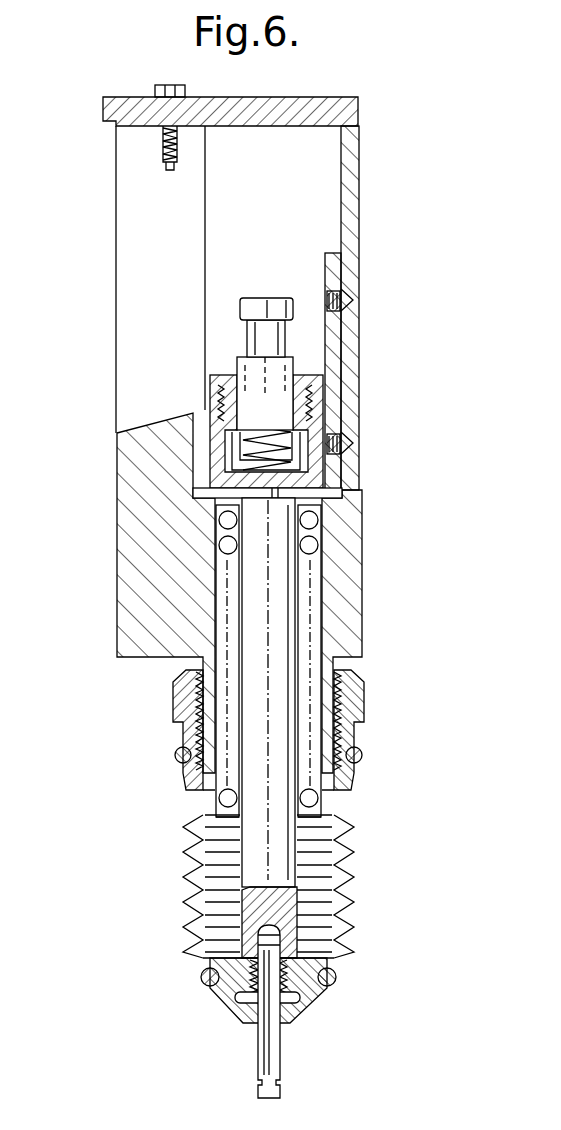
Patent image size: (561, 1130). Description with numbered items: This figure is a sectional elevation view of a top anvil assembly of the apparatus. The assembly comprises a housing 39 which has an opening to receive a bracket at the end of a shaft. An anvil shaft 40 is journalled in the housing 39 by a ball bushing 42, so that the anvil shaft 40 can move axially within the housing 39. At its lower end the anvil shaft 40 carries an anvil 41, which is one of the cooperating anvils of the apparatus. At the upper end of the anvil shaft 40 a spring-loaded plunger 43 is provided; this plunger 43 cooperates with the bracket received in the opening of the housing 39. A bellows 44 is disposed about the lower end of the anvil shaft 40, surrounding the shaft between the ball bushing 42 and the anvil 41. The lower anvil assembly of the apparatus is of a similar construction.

The housing 39 is at (350, 185).
The anvil shaft 40 is at (272, 583).
The anvil 41 is at (270, 1057).
The ball bushing 42 is at (313, 718).
The spring-loaded plunger 43 is at (292, 366).
The bellows 44 is at (350, 858).